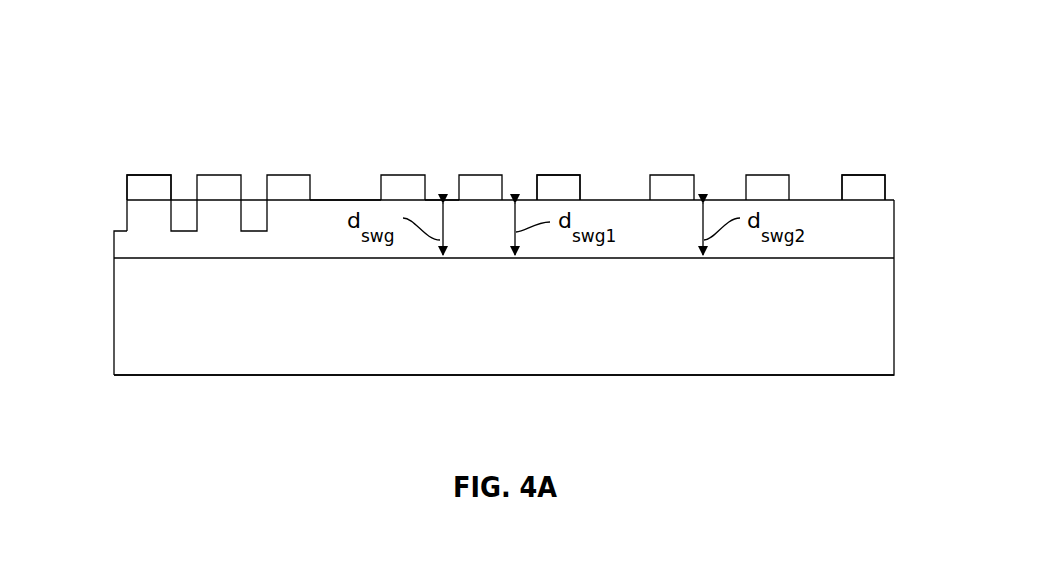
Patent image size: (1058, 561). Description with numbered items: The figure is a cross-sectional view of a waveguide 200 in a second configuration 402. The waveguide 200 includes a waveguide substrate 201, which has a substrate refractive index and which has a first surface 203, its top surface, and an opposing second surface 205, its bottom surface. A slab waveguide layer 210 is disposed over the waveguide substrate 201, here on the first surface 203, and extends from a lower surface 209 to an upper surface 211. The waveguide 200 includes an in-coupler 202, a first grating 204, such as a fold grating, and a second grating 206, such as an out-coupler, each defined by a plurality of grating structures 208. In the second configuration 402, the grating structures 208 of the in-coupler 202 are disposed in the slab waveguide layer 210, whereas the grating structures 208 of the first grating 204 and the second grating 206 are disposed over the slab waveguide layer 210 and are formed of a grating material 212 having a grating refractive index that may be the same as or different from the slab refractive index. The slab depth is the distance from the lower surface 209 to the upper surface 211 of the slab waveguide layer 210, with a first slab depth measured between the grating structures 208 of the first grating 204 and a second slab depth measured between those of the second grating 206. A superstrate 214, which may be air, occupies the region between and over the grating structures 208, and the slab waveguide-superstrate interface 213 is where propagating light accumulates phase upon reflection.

The waveguide 200 is at (863, 55).
The waveguide substrate 201 is at (527, 358).
The in-coupler 202 is at (310, 113).
The first surface 203 is at (872, 259).
The first grating 204 is at (580, 115).
The second surface 205 is at (828, 376).
The second grating 206 is at (883, 122).
The grating structures 208 is at (140, 195).
The lower surface 209 is at (443, 259).
The slab waveguide layer 210 is at (886, 242).
The upper surface 211 is at (440, 198).
The grating material 212 is at (873, 185).
The slab waveguide-superstrate interface 213 is at (342, 193).
The superstrate 214 is at (597, 153).
The second configuration 402 is at (105, 147).